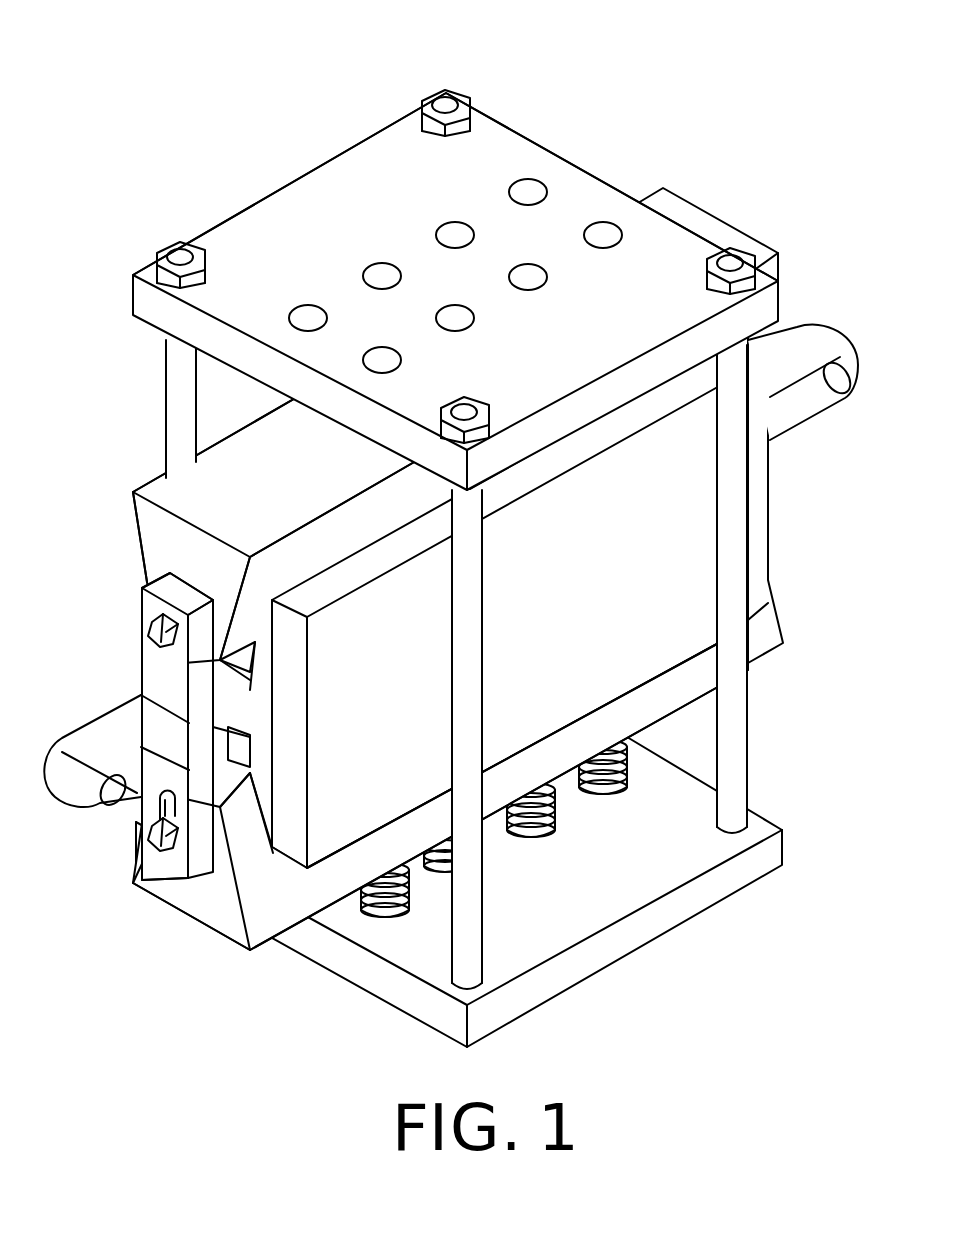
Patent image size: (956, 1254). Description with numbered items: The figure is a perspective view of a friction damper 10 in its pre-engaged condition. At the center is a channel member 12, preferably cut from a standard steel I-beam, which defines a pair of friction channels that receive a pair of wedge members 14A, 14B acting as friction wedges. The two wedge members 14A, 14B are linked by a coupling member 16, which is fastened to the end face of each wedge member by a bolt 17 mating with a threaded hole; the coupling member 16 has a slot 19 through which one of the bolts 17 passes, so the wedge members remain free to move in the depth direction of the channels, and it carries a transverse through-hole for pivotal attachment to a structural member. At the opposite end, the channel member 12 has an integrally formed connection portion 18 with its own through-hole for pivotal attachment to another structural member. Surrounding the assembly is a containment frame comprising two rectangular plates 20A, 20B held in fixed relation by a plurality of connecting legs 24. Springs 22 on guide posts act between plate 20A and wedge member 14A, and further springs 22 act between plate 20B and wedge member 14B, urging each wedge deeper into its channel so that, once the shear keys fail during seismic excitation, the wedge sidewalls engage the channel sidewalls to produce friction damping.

The friction damper 10 is at (182, 93).
The channel member 12 is at (574, 603).
The wedge member 14A is at (160, 498).
The wedge member 14B is at (210, 925).
The coupling member 16 is at (120, 735).
The bolt 17 is at (150, 630).
The connection portion 18 is at (813, 352).
The slot 19 is at (160, 812).
The rectangular plate 20A is at (300, 203).
The rectangular plate 20B is at (575, 967).
The springs 22 is at (362, 445).
The connecting legs 24 is at (165, 395).